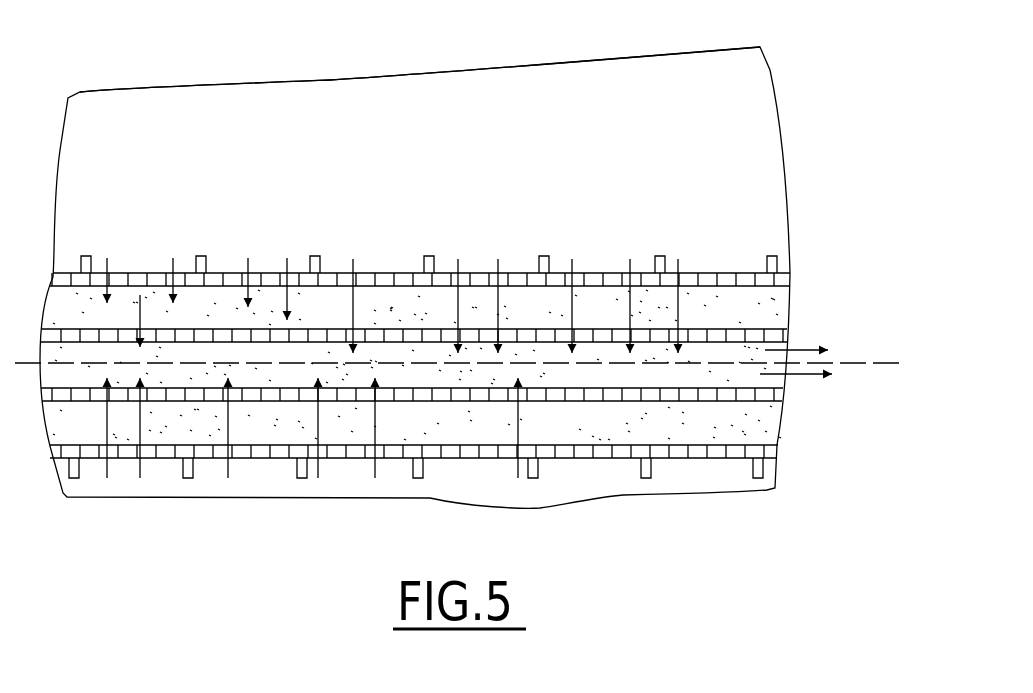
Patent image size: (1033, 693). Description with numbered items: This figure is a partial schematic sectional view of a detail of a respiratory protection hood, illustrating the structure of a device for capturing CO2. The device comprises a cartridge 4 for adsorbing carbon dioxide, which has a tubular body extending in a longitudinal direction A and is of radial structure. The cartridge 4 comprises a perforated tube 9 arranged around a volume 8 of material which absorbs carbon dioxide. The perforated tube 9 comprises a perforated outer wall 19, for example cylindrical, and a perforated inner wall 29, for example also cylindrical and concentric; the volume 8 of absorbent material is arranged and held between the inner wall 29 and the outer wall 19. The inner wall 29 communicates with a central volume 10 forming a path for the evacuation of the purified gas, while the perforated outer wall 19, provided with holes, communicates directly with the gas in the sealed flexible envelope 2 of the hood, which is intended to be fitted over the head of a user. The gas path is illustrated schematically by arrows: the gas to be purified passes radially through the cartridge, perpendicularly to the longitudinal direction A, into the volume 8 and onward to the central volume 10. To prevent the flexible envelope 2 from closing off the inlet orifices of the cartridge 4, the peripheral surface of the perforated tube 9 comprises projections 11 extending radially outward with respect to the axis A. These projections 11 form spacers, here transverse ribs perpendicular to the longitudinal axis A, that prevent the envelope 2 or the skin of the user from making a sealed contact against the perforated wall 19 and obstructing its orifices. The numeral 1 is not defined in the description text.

The wall element 1 is at (602, 503).
The sealed flexible envelope 2 is at (748, 94).
The cartridge 4 is at (512, 249).
The volume of material which absorbs carbon dioxide 8 is at (705, 277).
The perforated tube 9 is at (558, 277).
The central volume 10 is at (715, 377).
The projections 11 is at (426, 250).
The perforated outer wall 19 is at (690, 272).
The perforated inner wall 29 is at (702, 328).
The longitudinal direction A is at (875, 362).